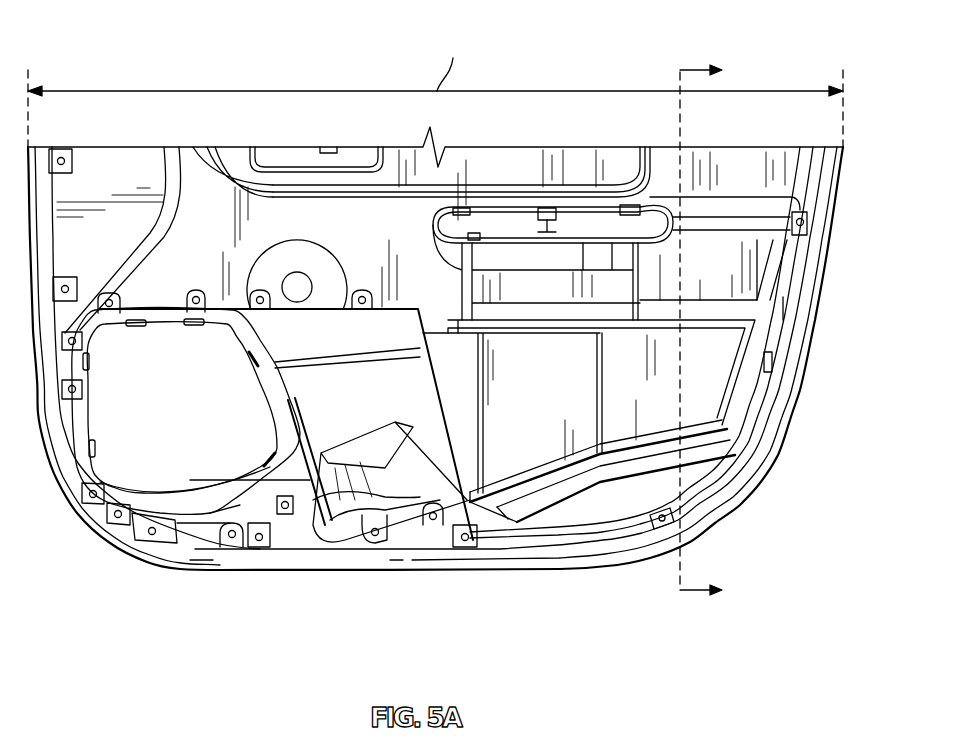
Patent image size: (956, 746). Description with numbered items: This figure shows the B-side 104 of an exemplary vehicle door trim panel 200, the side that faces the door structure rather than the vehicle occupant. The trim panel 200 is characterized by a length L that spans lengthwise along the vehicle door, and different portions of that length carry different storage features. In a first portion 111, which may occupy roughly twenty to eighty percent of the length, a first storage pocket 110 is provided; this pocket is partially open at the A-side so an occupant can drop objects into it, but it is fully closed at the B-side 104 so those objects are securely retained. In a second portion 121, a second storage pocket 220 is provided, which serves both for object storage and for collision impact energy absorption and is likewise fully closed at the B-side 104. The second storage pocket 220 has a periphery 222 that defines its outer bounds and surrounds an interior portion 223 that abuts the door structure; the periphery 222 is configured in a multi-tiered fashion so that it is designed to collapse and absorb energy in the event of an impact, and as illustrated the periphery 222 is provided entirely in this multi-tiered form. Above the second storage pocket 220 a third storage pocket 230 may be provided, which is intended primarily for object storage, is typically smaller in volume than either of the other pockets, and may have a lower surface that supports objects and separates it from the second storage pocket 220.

The vehicle door trim panel 200 is at (99, 40).
The B-side 104 is at (110, 160).
The first storage pocket 110 is at (352, 422).
The portion 111 is at (410, 613).
The portion 121 is at (753, 613).
The second storage pocket 220 is at (562, 396).
The periphery 222 is at (740, 397).
The interior portion 223 is at (720, 342).
The third storage pocket 230 is at (732, 273).